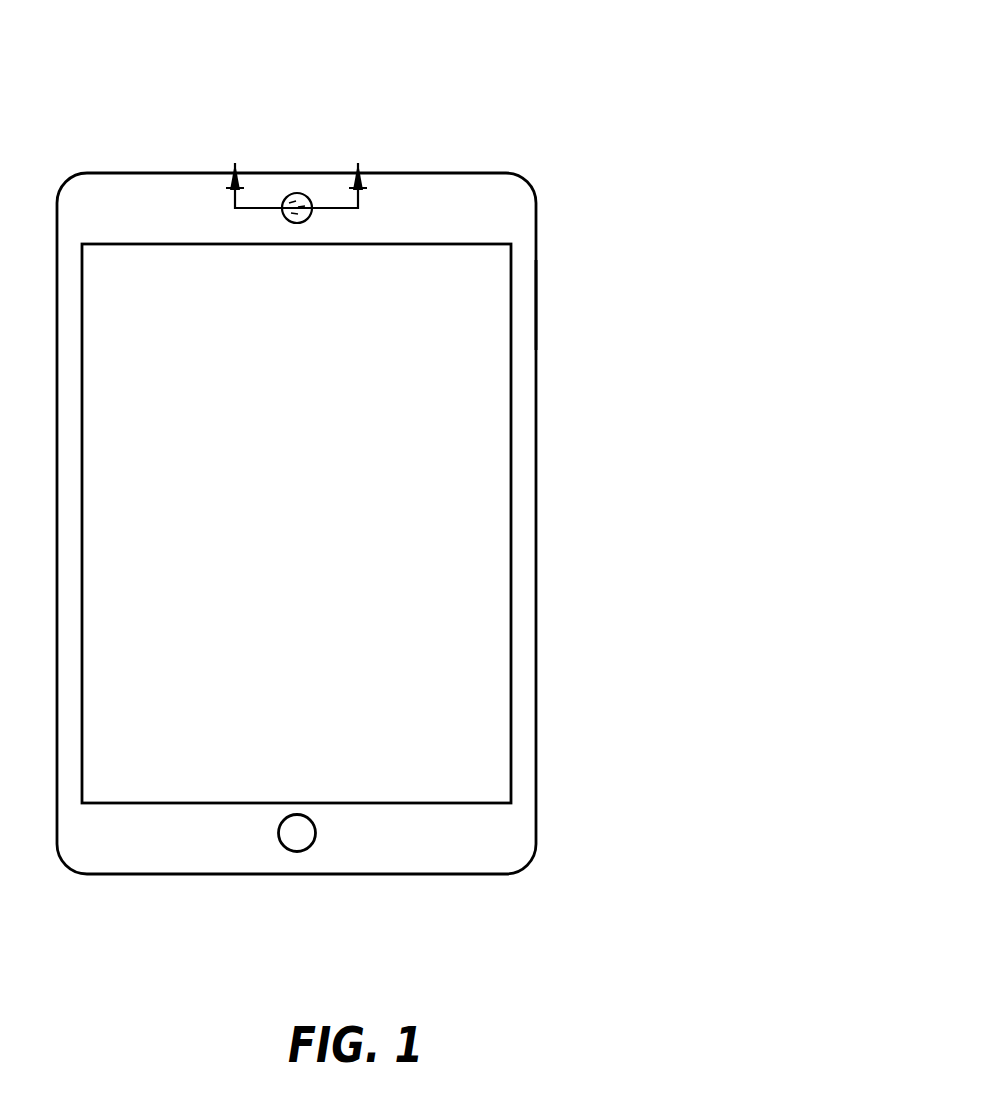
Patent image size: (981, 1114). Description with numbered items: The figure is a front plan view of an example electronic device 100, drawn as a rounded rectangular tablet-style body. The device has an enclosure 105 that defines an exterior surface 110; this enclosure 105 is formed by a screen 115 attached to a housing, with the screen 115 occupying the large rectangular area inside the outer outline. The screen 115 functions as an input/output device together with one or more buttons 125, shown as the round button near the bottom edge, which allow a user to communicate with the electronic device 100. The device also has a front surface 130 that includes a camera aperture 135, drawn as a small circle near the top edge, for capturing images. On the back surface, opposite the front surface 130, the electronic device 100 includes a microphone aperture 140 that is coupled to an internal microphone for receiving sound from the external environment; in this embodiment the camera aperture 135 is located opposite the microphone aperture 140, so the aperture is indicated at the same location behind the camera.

The electronic device 100 is at (583, 143).
The enclosure 105 is at (513, 213).
The exterior surface 110 is at (522, 303).
The screen 115 is at (460, 392).
The buttons 125 is at (297, 841).
The front surface 130 is at (320, 390).
The camera aperture 135 is at (303, 194).
The microphone aperture 140 is at (290, 204).